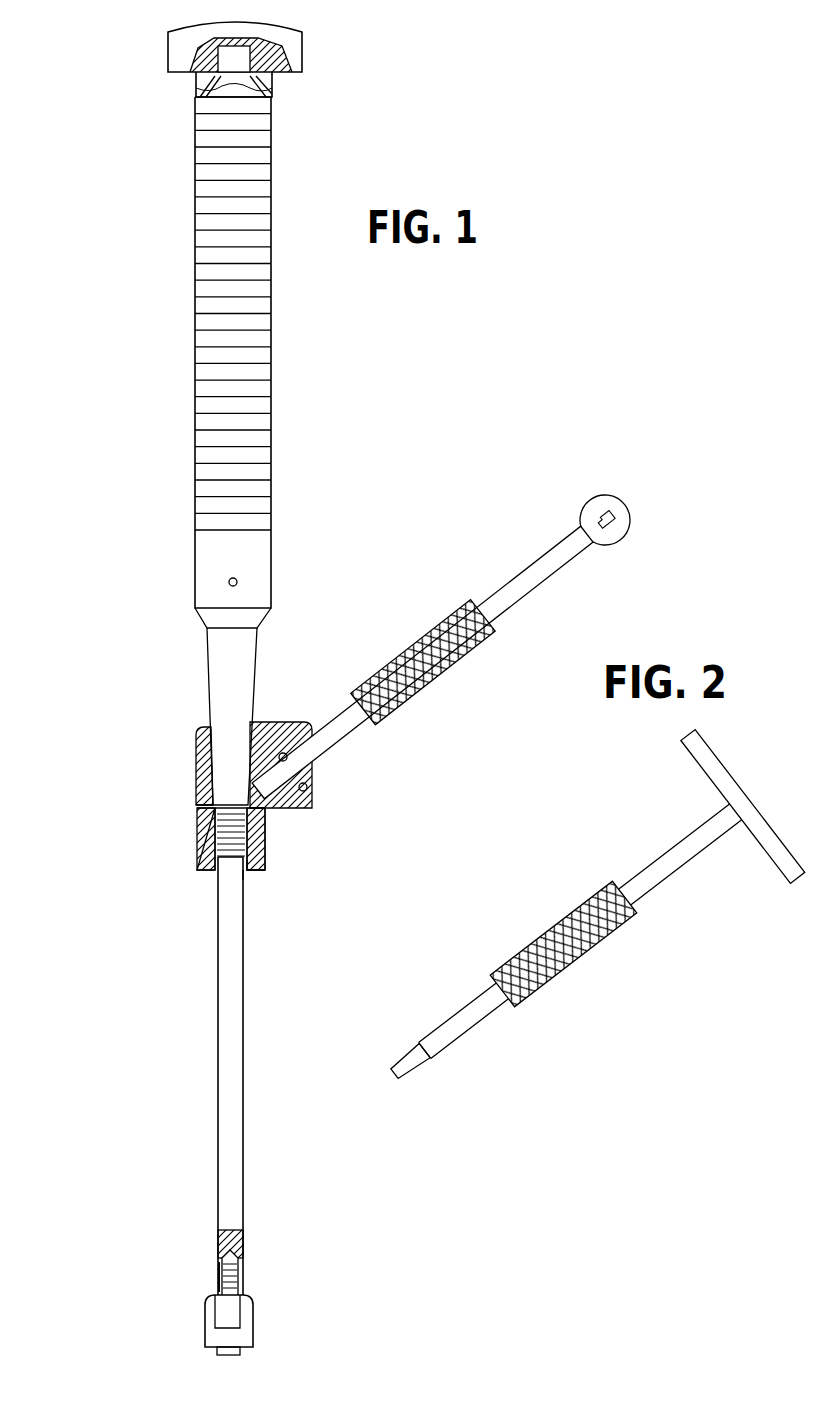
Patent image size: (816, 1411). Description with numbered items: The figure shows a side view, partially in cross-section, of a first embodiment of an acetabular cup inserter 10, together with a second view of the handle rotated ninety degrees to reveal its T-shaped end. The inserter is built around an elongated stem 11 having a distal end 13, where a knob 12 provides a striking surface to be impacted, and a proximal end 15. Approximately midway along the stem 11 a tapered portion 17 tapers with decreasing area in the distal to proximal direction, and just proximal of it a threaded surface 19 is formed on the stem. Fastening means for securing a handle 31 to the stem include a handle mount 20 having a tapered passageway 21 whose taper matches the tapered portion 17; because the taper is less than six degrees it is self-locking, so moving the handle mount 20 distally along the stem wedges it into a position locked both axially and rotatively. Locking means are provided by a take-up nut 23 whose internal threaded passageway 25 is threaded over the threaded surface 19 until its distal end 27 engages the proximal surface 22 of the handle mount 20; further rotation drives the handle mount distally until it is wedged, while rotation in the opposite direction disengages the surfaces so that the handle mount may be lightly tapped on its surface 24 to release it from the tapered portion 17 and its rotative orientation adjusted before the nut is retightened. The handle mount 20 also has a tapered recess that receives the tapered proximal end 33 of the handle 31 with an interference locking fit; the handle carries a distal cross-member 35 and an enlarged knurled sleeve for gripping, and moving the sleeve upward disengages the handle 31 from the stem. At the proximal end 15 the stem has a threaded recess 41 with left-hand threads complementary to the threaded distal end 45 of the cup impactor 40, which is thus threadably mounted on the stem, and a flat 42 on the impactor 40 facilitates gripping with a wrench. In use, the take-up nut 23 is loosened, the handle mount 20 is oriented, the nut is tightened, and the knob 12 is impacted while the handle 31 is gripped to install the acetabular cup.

In FIG. 1, the acetabular cup inserter 10 is at (135, 858).
In FIG. 1, the elongated stem 11 is at (165, 513).
In FIG. 1, the knob 12 is at (180, 47).
In FIG. 1, the distal end 13 is at (322, 52).
In FIG. 1, the proximal end 15 is at (170, 1284).
In FIG. 1, the tapered portion 17 is at (278, 722).
In FIG. 1, the threaded surface 19 is at (235, 852).
In FIG. 1, the handle mount 20 is at (310, 825).
In FIG. 1, the tapered passageway 21 is at (210, 752).
In FIG. 1, the proximal surface 22 is at (257, 820).
In FIG. 1, the take-up nut 23 is at (265, 868).
In FIG. 1, the surface 24 is at (262, 722).
In FIG. 1, the internal threaded passageway 25 is at (242, 873).
In FIG. 1, the distal end 27 is at (205, 797).
In FIG. 1, the handle 31 is at (441, 648).
In FIG. 1, the tapered proximal end 33 is at (300, 770).
In FIG. 1, the distal cross-member 35 is at (588, 508).
In FIG. 2, the distal cross-member 35 is at (705, 772).
In FIG. 1, the cup impactor 40 is at (288, 1346).
In FIG. 1, the threaded recess 41 is at (240, 1272).
In FIG. 1, the flat 42 is at (232, 1318).
In FIG. 1, the threaded distal end 45 is at (218, 1272).